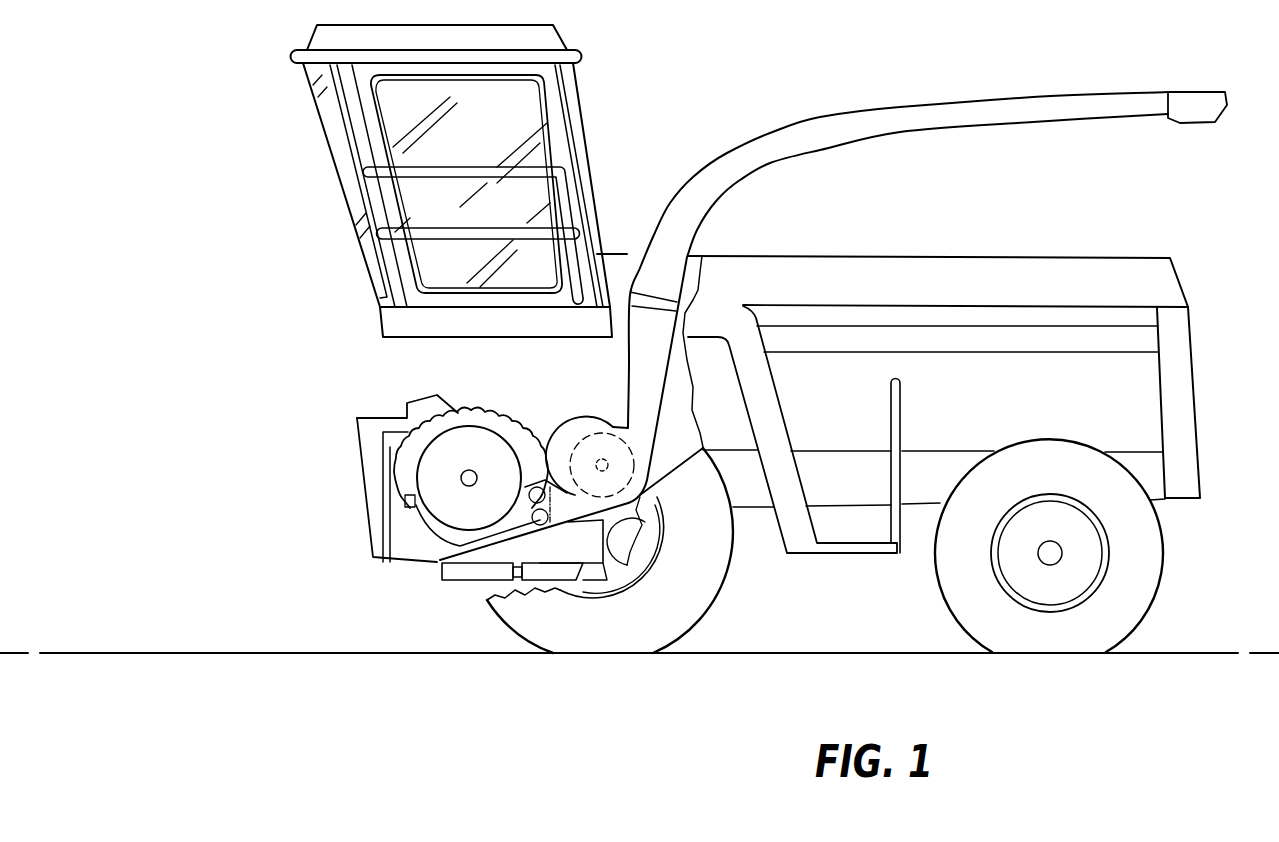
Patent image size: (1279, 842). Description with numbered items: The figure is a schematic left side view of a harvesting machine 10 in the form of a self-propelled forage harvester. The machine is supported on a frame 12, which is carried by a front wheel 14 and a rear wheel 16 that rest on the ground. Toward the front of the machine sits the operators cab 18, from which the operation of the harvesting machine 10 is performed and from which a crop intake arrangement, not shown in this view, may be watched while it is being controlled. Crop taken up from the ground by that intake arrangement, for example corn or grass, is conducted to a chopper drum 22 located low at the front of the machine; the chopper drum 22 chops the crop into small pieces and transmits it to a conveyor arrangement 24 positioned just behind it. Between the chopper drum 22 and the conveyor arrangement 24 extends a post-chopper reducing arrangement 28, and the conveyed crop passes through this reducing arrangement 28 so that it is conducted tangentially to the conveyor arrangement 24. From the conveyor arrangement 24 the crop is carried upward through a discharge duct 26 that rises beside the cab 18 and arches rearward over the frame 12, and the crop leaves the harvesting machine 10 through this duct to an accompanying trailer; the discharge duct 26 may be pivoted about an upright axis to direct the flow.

The harvesting machine 10 is at (268, 303).
The frame 12 is at (755, 508).
The front wheel 14 is at (700, 611).
The rear wheel 16 is at (1162, 590).
The operators cab 18 is at (327, 122).
The chopper drum 22 is at (437, 530).
The conveyor arrangement 24 is at (592, 422).
The discharge duct 26 is at (789, 126).
The post-chopper reducing arrangement 28 is at (543, 542).